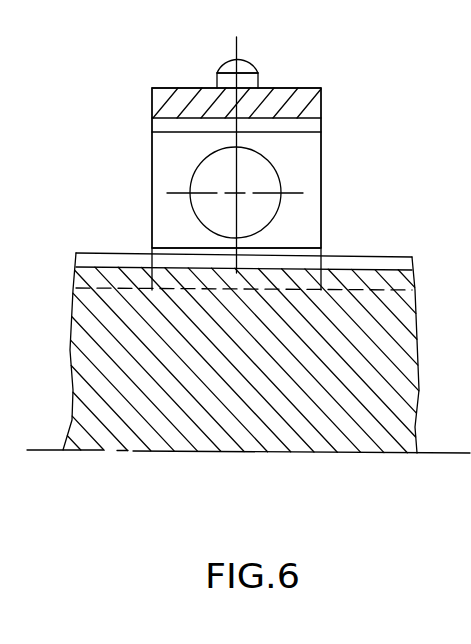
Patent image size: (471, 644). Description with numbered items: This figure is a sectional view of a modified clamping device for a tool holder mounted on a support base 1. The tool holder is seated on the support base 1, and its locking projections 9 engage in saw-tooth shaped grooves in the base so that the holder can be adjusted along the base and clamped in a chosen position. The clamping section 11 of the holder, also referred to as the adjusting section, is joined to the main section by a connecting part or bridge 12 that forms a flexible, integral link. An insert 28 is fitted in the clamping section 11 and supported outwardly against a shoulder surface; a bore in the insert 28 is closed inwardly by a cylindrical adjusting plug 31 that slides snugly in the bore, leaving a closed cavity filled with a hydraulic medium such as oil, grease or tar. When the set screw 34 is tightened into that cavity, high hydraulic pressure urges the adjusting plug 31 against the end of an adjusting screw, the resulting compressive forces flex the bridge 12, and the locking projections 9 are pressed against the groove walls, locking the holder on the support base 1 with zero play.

The support base 1 is at (408, 317).
The locking projections 9 is at (311, 261).
The clamping section 11 is at (307, 170).
The connecting part or bridge 12 is at (281, 95).
The insert 28 is at (162, 202).
The adjusting plug 31 is at (208, 177).
The set screw 34 is at (239, 78).